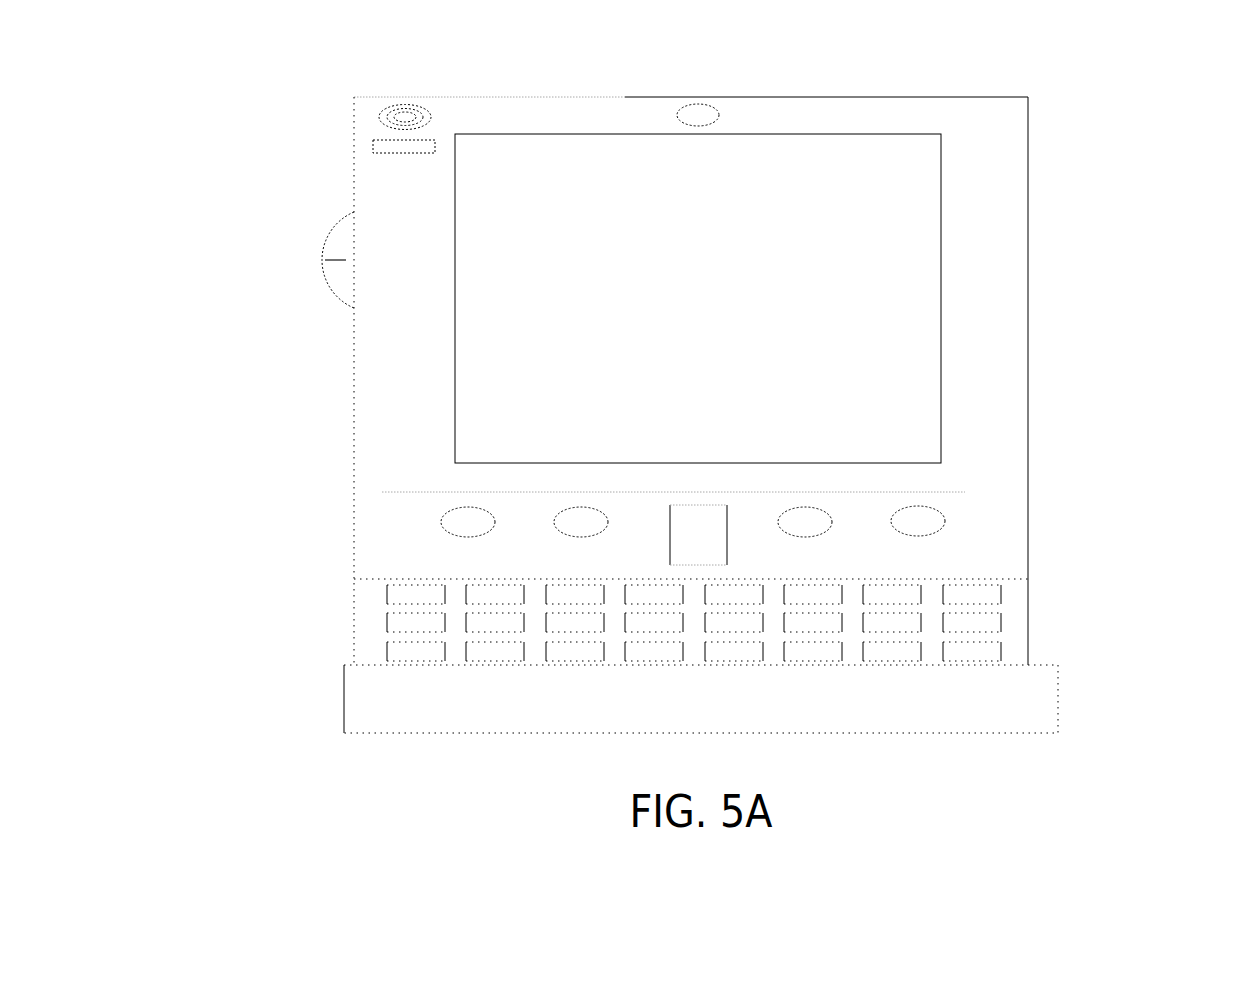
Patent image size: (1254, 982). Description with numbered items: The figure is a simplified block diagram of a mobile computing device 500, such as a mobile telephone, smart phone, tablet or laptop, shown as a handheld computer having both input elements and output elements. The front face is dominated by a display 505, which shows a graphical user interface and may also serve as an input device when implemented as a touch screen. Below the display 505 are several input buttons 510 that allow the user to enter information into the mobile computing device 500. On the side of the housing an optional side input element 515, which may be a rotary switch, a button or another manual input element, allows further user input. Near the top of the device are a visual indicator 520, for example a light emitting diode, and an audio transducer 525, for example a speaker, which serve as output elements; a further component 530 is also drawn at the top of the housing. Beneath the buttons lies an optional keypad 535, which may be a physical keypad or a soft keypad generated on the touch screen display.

The mobile computing device 500 is at (1013, 108).
The display 505 is at (605, 408).
The input buttons 510 is at (695, 539).
The side input element 515 is at (325, 260).
The visual indicator 520 is at (373, 152).
The audio transducer 525 is at (378, 117).
The camera / sensor 530 is at (718, 115).
The keypad 535 is at (367, 651).